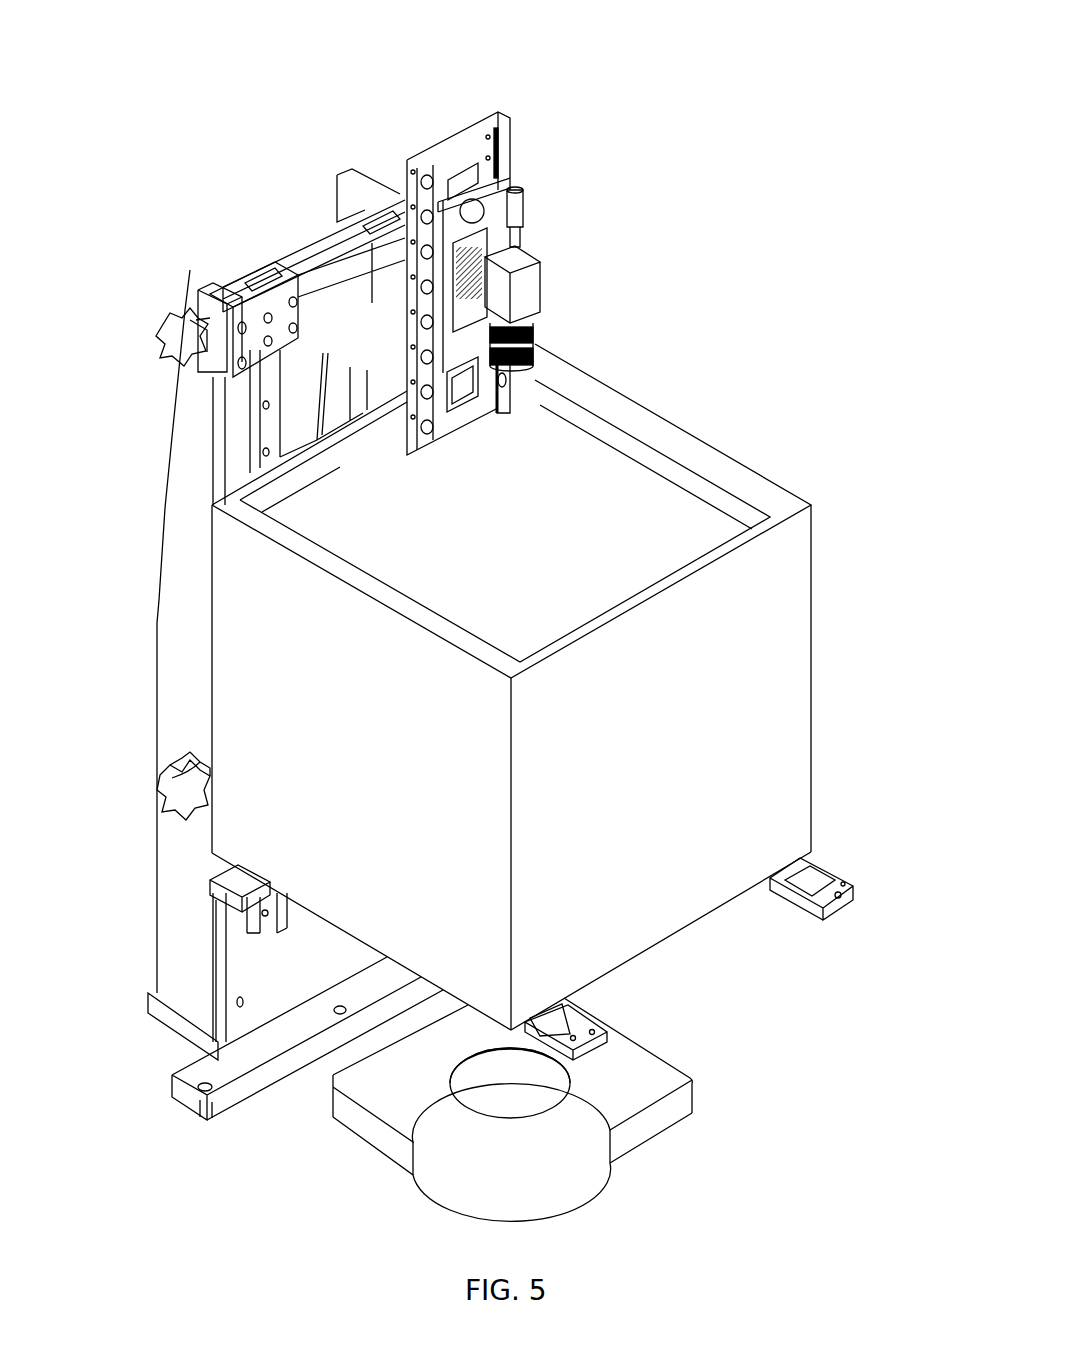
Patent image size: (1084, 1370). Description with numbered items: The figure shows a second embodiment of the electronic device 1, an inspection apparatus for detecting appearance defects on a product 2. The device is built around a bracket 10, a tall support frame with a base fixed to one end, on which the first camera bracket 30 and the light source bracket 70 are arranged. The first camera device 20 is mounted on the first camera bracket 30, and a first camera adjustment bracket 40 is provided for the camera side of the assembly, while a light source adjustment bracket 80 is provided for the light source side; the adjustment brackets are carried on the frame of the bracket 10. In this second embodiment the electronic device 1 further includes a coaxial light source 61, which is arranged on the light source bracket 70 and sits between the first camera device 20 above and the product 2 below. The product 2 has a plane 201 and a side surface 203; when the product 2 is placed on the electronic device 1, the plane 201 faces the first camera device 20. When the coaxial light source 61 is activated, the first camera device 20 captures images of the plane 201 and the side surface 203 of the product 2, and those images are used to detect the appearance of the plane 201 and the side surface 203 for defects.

The electronic device 1 is at (322, 58).
The bracket 10 is at (196, 290).
The first camera adjustment bracket 40 is at (352, 277).
The first camera bracket 30 is at (528, 193).
The first camera device 20 is at (530, 285).
The coaxial light source 61 is at (782, 662).
The light source adjustment bracket 80 is at (172, 778).
The light source bracket 70 is at (835, 882).
The product 2 is at (696, 1145).
The plane 201 is at (640, 1065).
The side surface 203 is at (558, 1190).